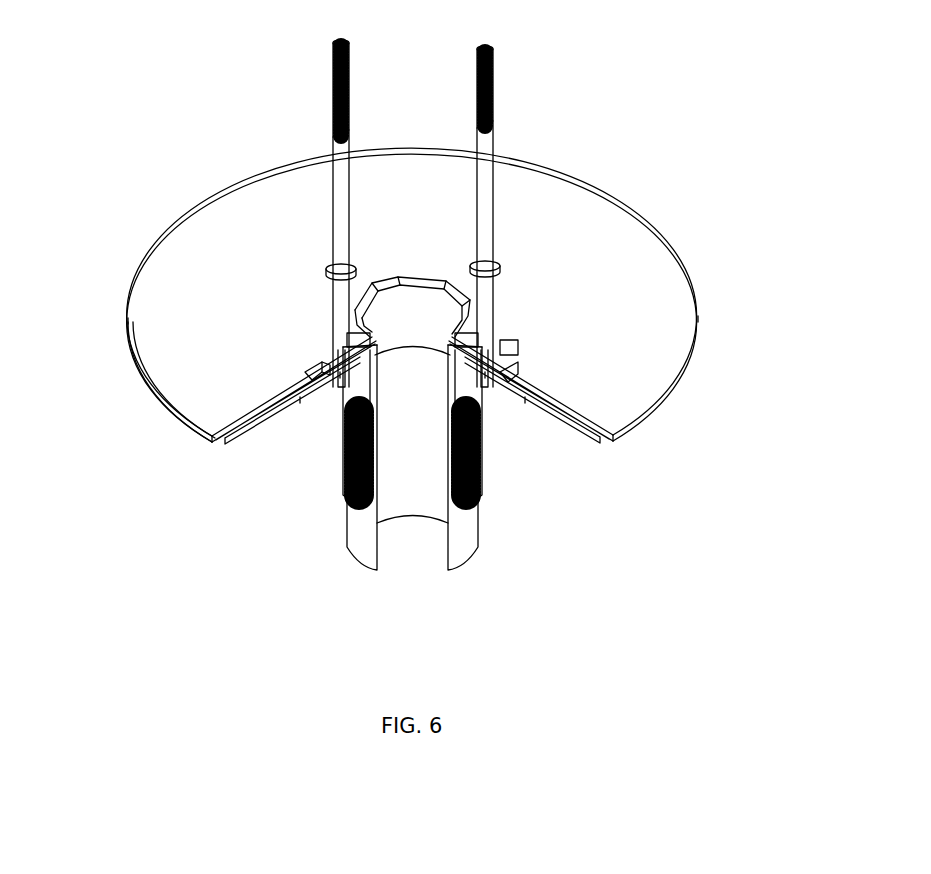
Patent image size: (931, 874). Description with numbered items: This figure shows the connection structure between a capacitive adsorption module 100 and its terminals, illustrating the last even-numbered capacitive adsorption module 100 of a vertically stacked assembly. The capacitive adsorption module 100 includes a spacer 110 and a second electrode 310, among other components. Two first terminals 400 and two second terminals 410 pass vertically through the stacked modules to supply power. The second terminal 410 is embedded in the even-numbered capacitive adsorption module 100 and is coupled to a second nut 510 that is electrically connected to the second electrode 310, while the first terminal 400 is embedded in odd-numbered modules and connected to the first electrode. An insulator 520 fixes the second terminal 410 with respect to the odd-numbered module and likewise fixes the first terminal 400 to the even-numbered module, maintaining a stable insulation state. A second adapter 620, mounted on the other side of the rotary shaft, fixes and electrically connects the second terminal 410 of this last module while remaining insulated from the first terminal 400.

The capacitive adsorption module 100 is at (620, 99).
The spacer 110 is at (698, 306).
The second electrode 310 is at (148, 305).
The first terminal 400 is at (332, 44).
The second terminal 410 is at (329, 140).
The second nut 510 is at (334, 386).
The insulator 520 is at (506, 346).
The second adapter 620 is at (494, 513).